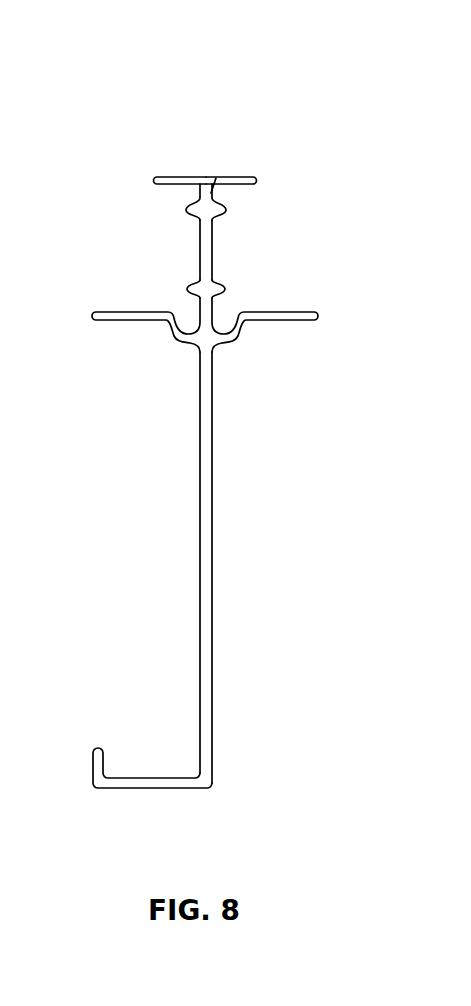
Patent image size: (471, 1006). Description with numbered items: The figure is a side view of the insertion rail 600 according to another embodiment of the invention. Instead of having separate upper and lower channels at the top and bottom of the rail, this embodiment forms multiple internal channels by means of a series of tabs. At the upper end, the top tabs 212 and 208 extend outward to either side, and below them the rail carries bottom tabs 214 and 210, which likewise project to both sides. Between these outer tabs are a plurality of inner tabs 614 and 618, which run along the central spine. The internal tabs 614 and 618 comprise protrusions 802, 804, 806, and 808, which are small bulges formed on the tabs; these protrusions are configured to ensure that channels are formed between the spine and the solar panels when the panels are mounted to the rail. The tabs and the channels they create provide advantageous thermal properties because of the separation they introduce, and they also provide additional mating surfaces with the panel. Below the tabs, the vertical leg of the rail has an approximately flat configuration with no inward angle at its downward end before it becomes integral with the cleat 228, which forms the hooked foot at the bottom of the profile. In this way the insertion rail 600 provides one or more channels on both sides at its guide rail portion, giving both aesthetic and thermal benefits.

The insertion rail 600 is at (166, 76).
The top tab 212 is at (165, 177).
The top tab 208 is at (247, 177).
The inner tab 614 is at (222, 177).
The protrusion 802 is at (187, 212).
The protrusion 804 is at (226, 208).
The inner tab 618 is at (213, 253).
The protrusion 808 is at (188, 289).
The protrusion 806 is at (226, 286).
The bottom tab 214 is at (125, 322).
The bottom tab 210 is at (307, 322).
The cleat 228 is at (153, 790).